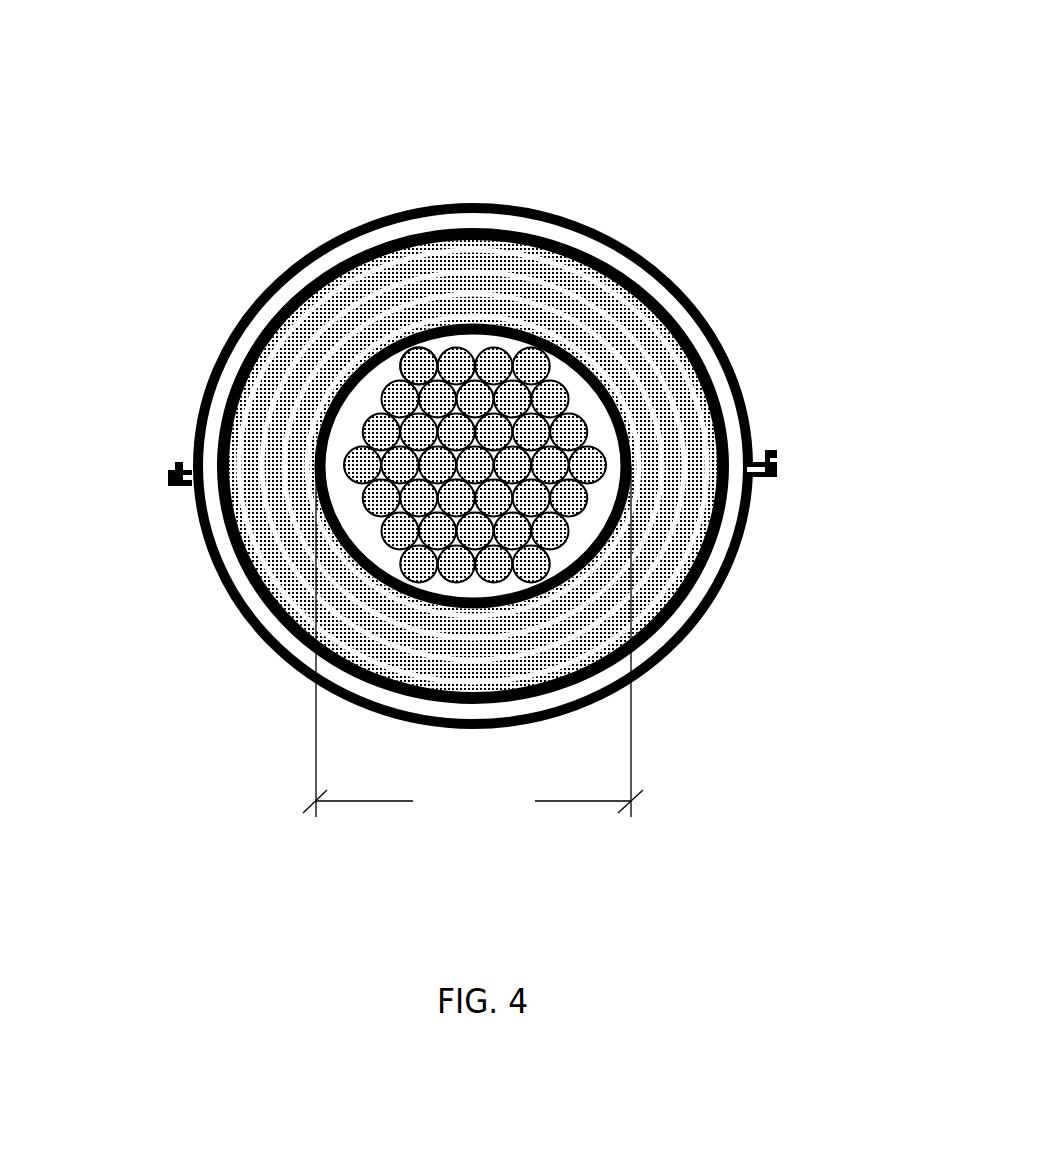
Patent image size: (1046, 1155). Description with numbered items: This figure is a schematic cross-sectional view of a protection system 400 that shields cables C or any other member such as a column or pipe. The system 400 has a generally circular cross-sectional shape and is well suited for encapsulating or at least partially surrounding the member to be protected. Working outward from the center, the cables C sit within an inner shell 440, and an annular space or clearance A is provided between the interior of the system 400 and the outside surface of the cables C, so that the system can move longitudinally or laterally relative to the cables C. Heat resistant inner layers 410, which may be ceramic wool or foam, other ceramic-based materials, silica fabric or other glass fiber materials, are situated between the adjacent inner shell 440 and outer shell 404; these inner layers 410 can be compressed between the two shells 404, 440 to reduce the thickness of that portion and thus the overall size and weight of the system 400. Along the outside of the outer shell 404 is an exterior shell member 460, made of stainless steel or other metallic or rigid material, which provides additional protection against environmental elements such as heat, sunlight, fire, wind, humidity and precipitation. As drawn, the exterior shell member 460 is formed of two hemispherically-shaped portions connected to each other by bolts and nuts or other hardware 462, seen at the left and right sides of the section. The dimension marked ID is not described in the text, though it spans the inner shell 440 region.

The protection system 400 is at (703, 118).
The outer shell 404 is at (667, 303).
The heat resistant inner layers 410 is at (705, 448).
The inner shell 440 is at (322, 525).
The exterior shell member 460 is at (728, 597).
The bolts and nuts or other hardware 462 is at (158, 473).
The annular space or clearance A is at (385, 365).
The cables C is at (362, 450).
The inner diameter ID is at (473, 643).